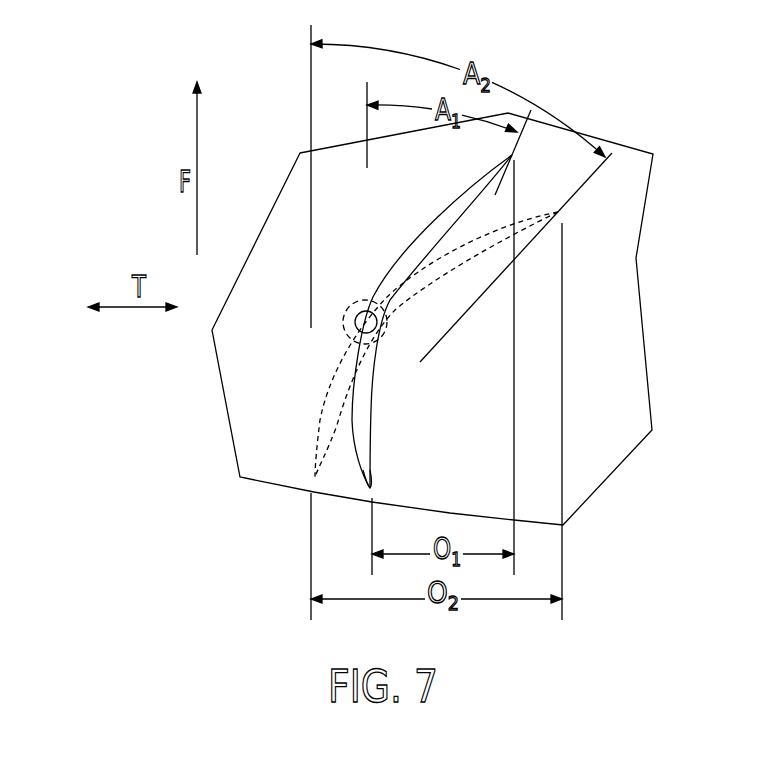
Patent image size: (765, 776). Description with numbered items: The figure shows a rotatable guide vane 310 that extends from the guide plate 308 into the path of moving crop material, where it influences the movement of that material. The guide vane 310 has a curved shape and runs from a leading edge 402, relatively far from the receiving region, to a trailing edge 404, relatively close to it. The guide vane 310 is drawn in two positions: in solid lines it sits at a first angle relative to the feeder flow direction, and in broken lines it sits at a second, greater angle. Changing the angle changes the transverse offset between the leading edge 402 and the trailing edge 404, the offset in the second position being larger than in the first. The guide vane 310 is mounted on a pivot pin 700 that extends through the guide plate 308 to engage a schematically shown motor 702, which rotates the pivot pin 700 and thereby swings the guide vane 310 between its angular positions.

The guide plate 308 is at (252, 358).
The guide vane 310 is at (417, 237).
The leading edge 402 is at (371, 489).
The trailing edge 404 is at (513, 154).
The pivot pin 700 is at (352, 304).
The motor 702 is at (343, 326).